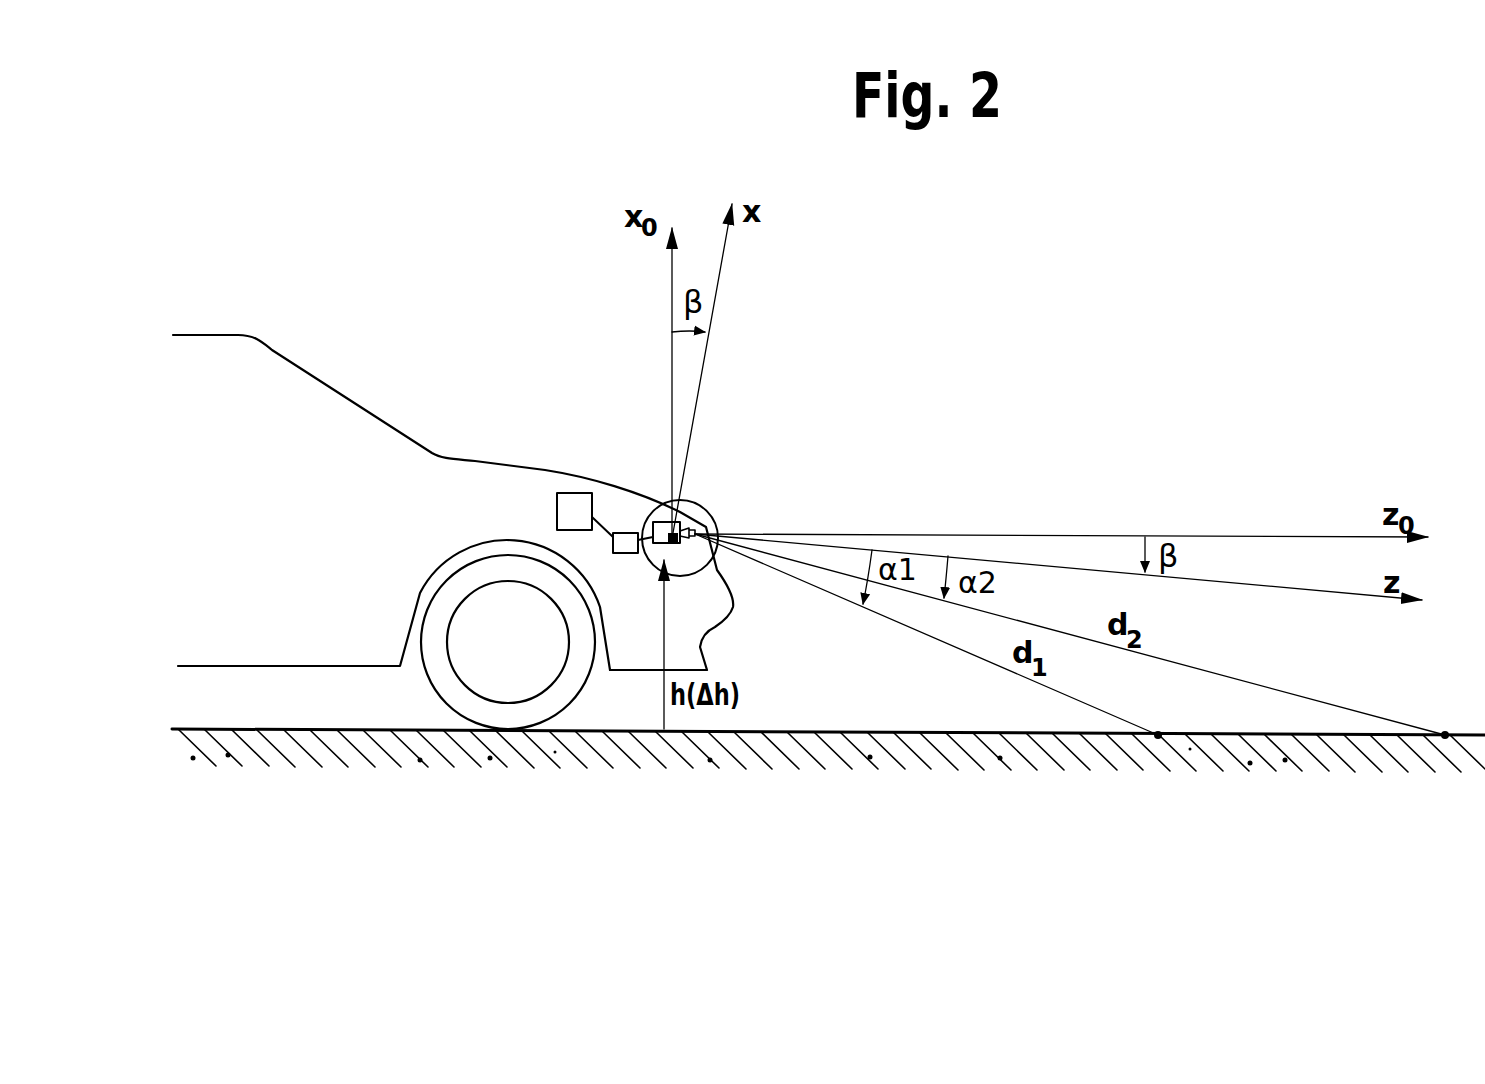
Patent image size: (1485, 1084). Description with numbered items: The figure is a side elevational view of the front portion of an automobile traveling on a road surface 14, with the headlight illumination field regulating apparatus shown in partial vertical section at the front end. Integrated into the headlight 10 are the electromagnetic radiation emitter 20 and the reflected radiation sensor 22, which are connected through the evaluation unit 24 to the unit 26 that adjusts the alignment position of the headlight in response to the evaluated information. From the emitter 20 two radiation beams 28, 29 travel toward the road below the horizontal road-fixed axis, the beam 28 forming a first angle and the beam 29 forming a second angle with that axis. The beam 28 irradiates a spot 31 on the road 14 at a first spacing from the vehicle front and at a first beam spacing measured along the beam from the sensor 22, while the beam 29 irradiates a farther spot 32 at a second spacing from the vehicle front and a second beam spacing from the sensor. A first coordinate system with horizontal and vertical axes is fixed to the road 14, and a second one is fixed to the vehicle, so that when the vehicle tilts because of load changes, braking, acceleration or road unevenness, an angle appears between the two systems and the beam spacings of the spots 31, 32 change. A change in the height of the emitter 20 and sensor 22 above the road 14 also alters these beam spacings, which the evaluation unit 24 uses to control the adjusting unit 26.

The headlight 10 is at (681, 475).
The road surface 14 is at (1023, 717).
The electromagnetic radiation emitter 20 is at (635, 458).
The reflected radiation sensor 22 is at (660, 522).
The evaluation unit 24 is at (557, 510).
The headlight alignment adjusting unit 26 is at (622, 533).
The radiation beam 28 is at (903, 623).
The radiation beam 29 is at (1195, 665).
The irradiated spot 31 is at (1158, 737).
The irradiated spot 32 is at (1445, 733).